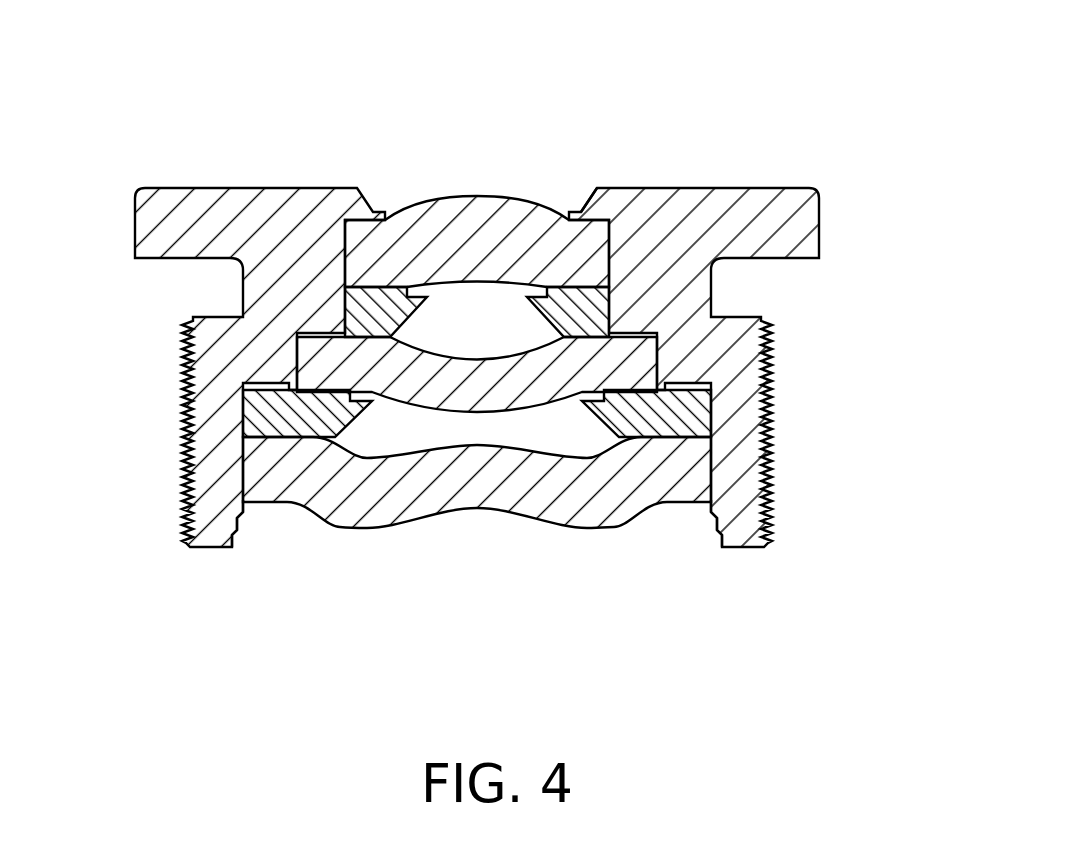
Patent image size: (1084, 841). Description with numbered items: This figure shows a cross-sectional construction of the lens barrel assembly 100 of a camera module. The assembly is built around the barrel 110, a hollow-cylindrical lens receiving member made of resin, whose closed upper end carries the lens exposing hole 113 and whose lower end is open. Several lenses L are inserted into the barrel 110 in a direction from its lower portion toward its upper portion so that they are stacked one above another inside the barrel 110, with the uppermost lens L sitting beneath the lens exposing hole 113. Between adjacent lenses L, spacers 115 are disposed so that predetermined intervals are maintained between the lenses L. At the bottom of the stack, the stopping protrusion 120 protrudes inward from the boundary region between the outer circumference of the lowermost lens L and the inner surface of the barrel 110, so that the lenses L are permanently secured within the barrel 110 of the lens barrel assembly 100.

The lens barrel assembly 100 is at (503, 277).
The barrel 110 is at (748, 343).
The lens exposing hole 113 is at (583, 196).
The spacer 115 is at (715, 434).
The stopping protrusion 120 is at (713, 507).
The lens L is at (320, 363).